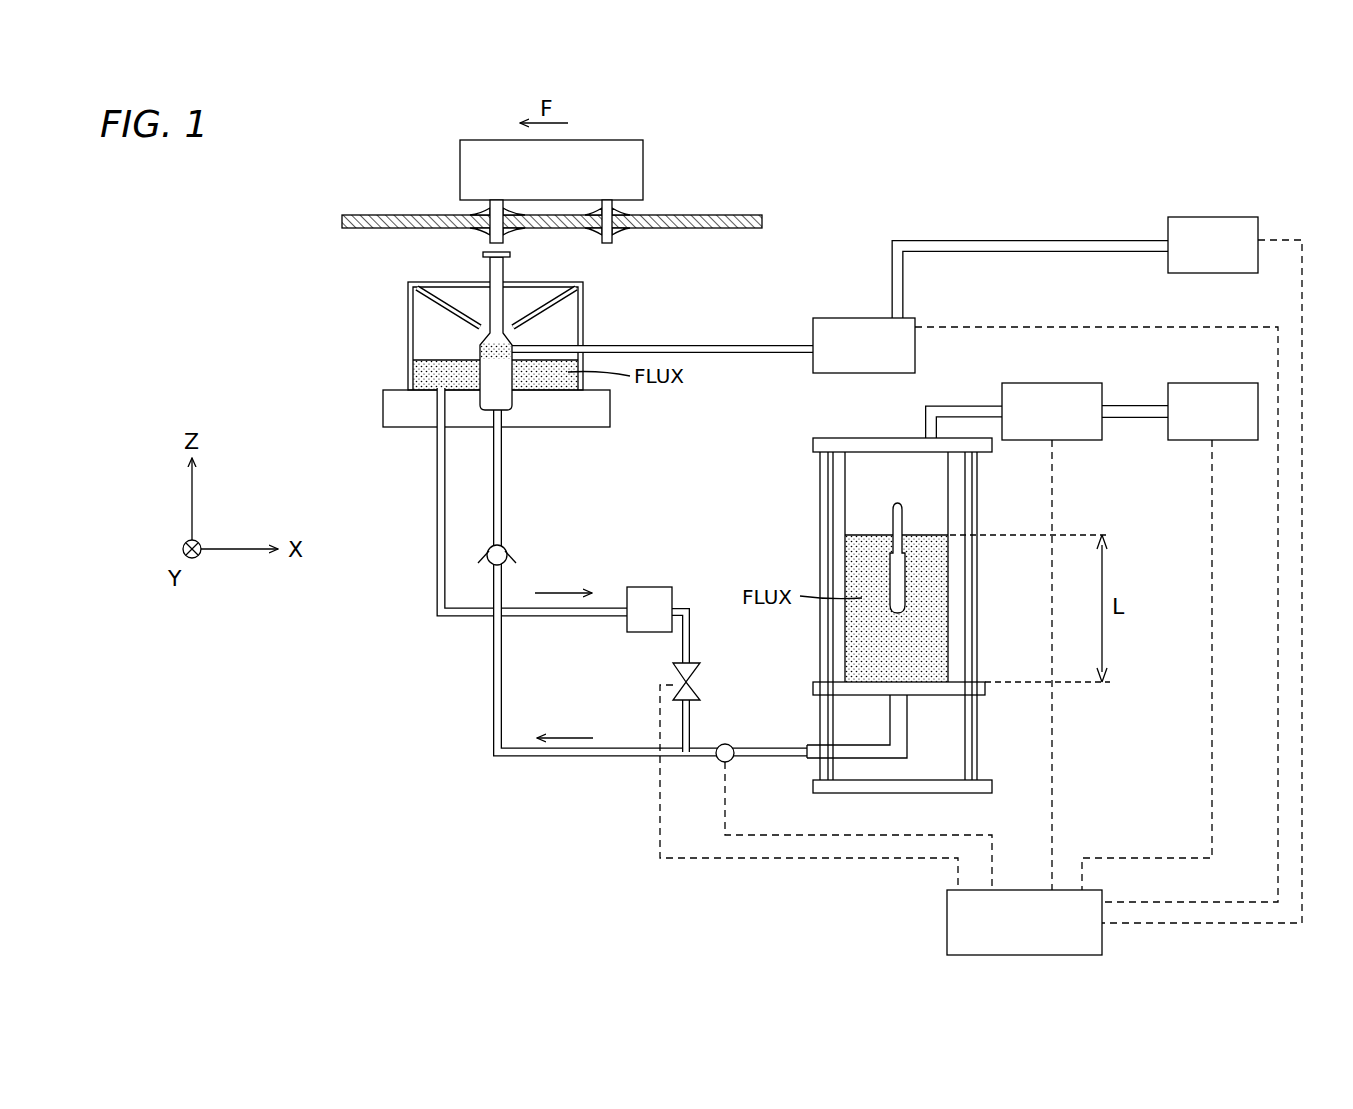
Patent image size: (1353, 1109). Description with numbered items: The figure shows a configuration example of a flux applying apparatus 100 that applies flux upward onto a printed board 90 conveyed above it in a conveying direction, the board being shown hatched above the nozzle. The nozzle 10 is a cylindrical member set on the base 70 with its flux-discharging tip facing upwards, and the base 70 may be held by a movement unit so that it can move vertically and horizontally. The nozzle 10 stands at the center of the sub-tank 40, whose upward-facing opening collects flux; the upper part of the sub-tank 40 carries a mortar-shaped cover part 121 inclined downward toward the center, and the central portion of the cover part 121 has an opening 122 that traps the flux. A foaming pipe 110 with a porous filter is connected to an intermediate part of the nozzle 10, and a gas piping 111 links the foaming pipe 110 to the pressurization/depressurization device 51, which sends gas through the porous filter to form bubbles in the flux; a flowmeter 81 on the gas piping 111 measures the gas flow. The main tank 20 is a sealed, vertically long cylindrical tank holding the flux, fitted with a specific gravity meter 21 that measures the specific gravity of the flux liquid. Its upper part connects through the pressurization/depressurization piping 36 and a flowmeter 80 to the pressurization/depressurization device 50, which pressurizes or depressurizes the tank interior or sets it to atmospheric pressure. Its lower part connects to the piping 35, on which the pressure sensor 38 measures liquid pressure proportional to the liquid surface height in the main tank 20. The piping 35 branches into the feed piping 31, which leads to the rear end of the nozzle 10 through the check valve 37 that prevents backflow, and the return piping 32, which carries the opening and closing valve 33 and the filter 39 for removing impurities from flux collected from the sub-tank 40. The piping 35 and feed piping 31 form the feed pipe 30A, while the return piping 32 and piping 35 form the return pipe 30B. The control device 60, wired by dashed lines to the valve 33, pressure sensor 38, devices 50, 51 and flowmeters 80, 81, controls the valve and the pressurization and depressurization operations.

The flux applying apparatus 100 is at (1072, 118).
The circuit board 90 is at (698, 215).
The nozzle 10 is at (507, 272).
The cover part 121 is at (545, 307).
The opening 122 is at (473, 330).
The sub-tank 40 is at (583, 328).
The base 70 is at (600, 418).
The foaming pipe 110 is at (505, 358).
The gas piping 111 is at (757, 345).
The flowmeter 81 is at (863, 326).
The pressurization/depressurization device 51 is at (1225, 228).
The pressurization/depressurization piping 36 is at (965, 405).
The flowmeter 80 is at (1085, 432).
The pressurization/depressurization device 50 is at (1230, 442).
The main tank 20 is at (965, 600).
The specific gravity meter 21 is at (893, 515).
The feed piping 31 is at (502, 508).
The return piping 32 is at (437, 565).
The piping 35 is at (812, 746).
The check valve 37 is at (510, 557).
The pressure sensor 38 is at (721, 764).
The filter 39 is at (650, 587).
The opening and closing valve 33 is at (700, 682).
The control device 60 is at (947, 925).
The feed pipe 30A is at (358, 702).
The return pipe 30B is at (358, 798).